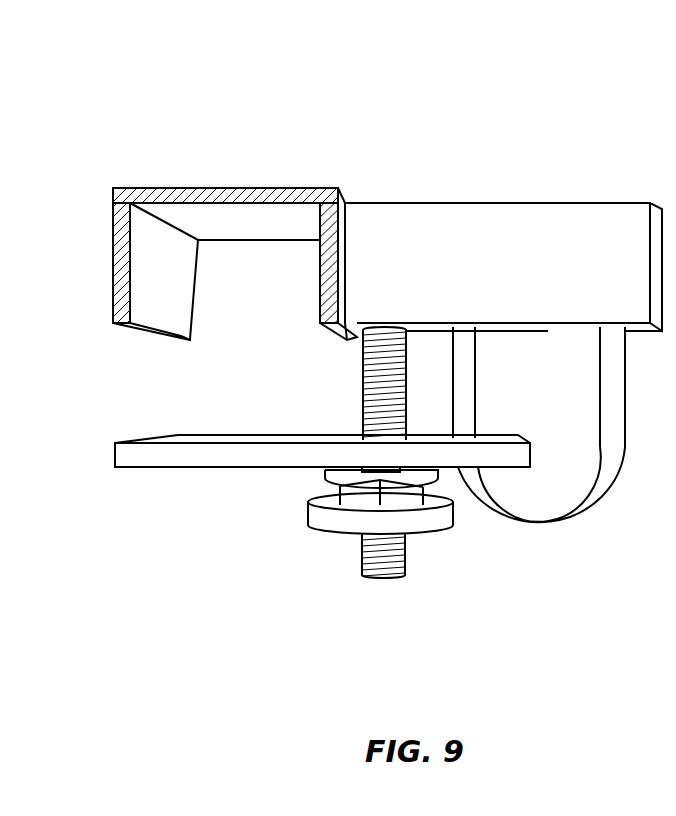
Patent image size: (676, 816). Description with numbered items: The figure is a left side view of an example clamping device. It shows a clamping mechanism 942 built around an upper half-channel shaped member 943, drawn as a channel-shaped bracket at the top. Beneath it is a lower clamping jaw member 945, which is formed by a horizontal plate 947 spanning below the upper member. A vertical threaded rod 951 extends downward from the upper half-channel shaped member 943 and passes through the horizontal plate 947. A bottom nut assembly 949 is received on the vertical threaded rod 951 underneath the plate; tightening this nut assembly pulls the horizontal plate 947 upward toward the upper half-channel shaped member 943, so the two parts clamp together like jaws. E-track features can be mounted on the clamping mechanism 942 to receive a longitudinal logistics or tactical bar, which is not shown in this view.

The clamping mechanism 942 is at (138, 186).
The upper half-channel shaped member 943 is at (276, 188).
The lower clamping jaw member 945 is at (340, 390).
The horizontal plate 947 is at (173, 467).
The bottom nut assembly 949 is at (453, 532).
The vertical threaded rod 951 is at (363, 578).